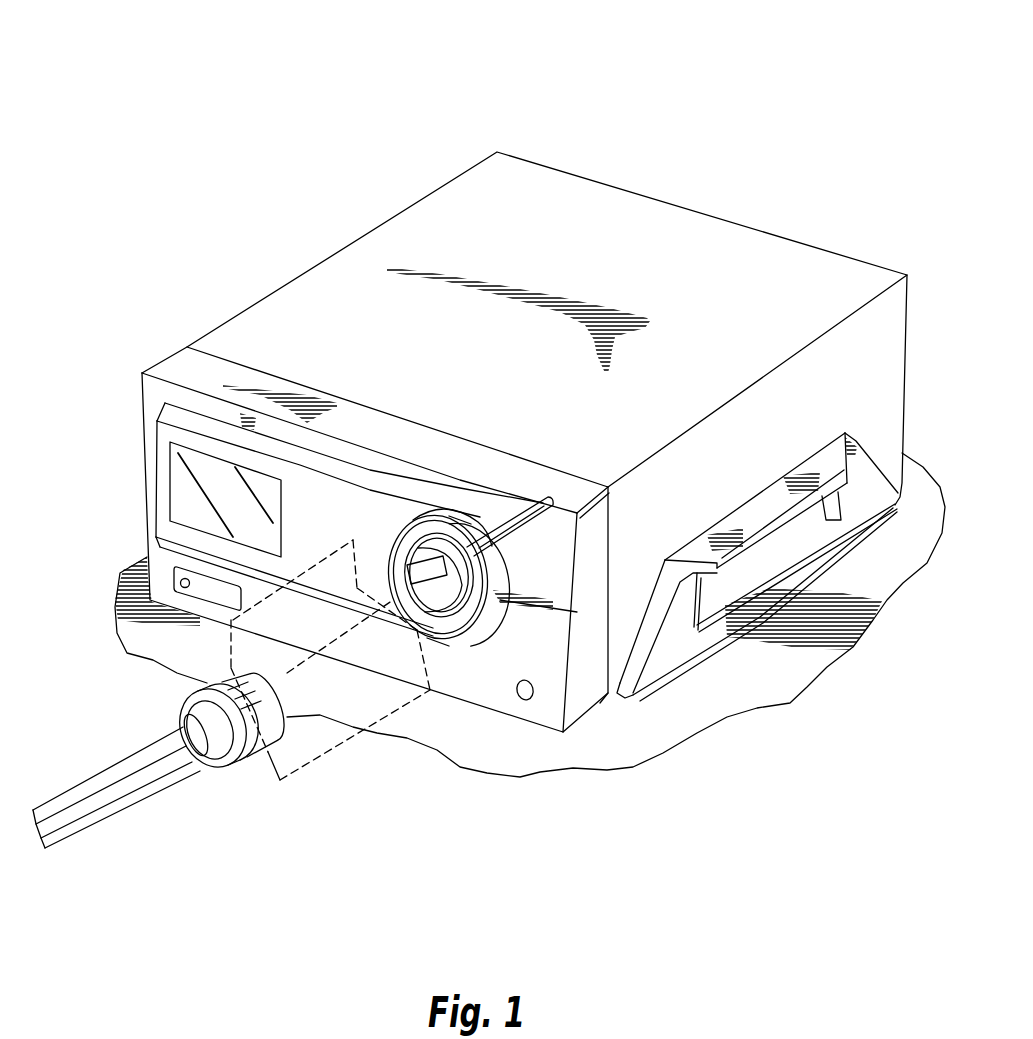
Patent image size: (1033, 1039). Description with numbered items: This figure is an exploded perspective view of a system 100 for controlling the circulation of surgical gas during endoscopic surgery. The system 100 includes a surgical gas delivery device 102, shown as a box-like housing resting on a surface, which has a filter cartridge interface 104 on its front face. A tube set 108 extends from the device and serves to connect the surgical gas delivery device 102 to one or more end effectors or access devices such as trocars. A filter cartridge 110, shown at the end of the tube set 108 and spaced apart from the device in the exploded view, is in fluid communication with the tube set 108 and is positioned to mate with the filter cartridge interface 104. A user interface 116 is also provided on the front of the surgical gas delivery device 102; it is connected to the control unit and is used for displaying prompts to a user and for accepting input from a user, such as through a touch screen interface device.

The system 100 is at (240, 183).
The surgical gas delivery device 102 is at (652, 198).
The filter cartridge interface 104 is at (414, 528).
The tube set 108 is at (134, 808).
The filter cartridge 110 is at (234, 782).
The user interface 116 is at (183, 490).